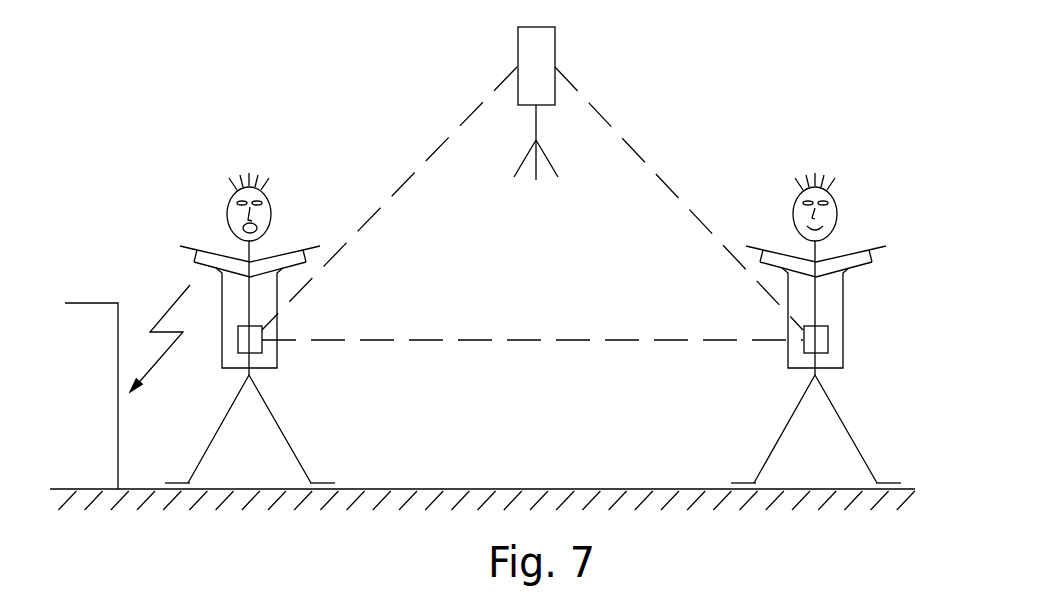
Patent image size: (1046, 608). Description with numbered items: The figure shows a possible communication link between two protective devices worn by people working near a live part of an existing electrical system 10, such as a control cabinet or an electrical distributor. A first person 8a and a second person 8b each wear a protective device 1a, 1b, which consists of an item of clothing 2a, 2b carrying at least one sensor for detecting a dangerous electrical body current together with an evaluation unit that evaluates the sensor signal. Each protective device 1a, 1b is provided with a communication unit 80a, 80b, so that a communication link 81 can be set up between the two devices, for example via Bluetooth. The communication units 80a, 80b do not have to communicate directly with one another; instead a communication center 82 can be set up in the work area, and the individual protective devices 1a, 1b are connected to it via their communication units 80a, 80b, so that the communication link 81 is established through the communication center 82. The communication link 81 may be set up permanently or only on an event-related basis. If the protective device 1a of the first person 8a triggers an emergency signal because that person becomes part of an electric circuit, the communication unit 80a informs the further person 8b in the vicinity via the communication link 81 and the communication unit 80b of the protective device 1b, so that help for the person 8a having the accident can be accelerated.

The electrical system 10 is at (97, 375).
The person 8a is at (248, 283).
The person 8b is at (843, 285).
The item of clothing 2a is at (218, 252).
The item of clothing 2b is at (841, 217).
The protective device 1a is at (279, 357).
The protective device 1b is at (867, 318).
The communication unit 80a is at (238, 338).
The communication unit 80b is at (879, 352).
The communication link 81 is at (532, 343).
The communication center 82 is at (555, 43).